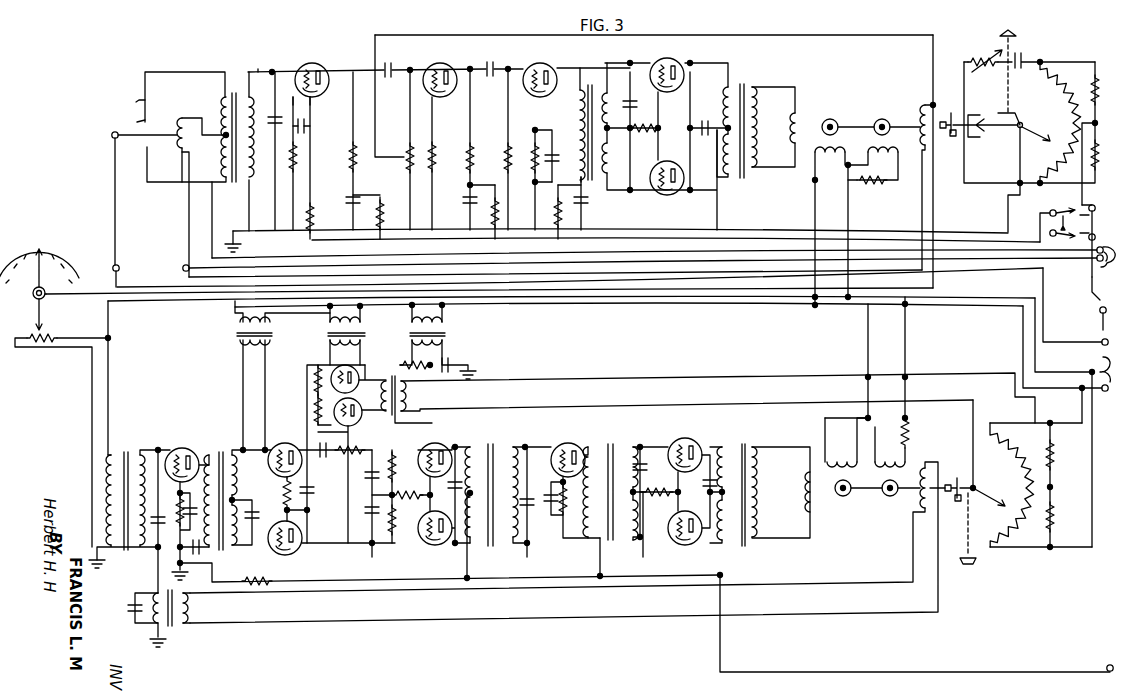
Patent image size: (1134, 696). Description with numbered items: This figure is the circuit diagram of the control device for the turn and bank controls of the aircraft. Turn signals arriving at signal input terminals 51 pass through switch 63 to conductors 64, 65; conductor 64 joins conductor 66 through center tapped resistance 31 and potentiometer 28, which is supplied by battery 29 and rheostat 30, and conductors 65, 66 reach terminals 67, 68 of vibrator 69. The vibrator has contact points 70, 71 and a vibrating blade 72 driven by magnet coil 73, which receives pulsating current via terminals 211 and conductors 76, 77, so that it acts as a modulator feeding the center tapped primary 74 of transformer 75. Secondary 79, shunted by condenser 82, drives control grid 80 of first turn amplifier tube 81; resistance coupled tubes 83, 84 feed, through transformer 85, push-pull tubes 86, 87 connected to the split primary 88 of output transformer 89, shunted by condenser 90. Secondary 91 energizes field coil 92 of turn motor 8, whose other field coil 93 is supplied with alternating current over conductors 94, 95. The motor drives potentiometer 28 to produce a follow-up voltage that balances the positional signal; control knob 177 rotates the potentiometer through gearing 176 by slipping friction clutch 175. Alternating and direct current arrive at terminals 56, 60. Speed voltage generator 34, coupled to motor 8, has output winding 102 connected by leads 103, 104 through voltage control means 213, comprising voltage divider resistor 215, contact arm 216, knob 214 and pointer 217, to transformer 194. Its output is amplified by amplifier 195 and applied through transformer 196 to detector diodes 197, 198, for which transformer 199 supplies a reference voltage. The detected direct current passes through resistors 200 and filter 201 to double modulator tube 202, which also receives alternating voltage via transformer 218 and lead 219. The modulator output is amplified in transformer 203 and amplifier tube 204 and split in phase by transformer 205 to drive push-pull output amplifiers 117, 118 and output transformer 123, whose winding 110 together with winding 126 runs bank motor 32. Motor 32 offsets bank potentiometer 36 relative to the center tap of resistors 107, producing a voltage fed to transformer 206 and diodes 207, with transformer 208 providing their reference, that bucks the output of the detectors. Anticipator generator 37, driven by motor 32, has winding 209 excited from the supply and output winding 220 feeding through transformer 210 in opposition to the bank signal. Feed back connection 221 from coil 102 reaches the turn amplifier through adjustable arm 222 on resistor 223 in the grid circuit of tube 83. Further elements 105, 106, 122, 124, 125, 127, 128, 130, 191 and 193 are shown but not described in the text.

The turn motor 8 is at (824, 120).
The potentiometer 28 is at (1051, 124).
The battery 29 is at (1026, 55).
The rheostat 30 is at (970, 55).
The center tapped resistance 31 is at (1097, 123).
The bank motor 32 is at (843, 496).
The speed voltage generator 34 is at (882, 119).
The bank potentiometer 36 is at (989, 482).
The anticipator generator 37 is at (890, 496).
The signal input terminals 51 is at (1104, 295).
The alternating current supply terminals 56 is at (1072, 422).
The direct current terminal 60 is at (1097, 329).
The switch 63 is at (1063, 226).
The conductor 64 is at (1052, 208).
The conductor 65 is at (1072, 305).
The conductor 66 is at (1008, 208).
The vibrator terminal 67 is at (119, 268).
The vibrator terminal 68 is at (183, 268).
The vibrator 69 is at (132, 101).
The contact point 70 is at (132, 118).
The contact point 71 is at (147, 147).
The vibrating blade 72 is at (112, 133).
The magnet coil 73 is at (178, 118).
The center tapped primary 74 is at (221, 110).
The transformer 75 is at (235, 78).
The conductor 76 is at (189, 190).
The conductor 77 is at (212, 190).
The secondary 79 is at (260, 62).
The control grid 80 is at (295, 63).
The first turn amplifier tube 81 is at (322, 64).
The condenser 82 is at (266, 170).
The resistance coupled tube 83 is at (449, 58).
The resistance coupled tube 84 is at (546, 64).
The transformer 85 is at (590, 85).
The push-pull tube 86 is at (677, 52).
The push-pull tube 87 is at (672, 195).
The split primary 88 is at (722, 98).
The output transformer 89 is at (748, 80).
The condenser 90 is at (695, 123).
The secondary 91 is at (762, 100).
The field coil 92 is at (790, 125).
The field coil 93 is at (830, 163).
The conductor 94 is at (815, 208).
The conductor 95 is at (848, 208).
The output winding 102 is at (922, 100).
The lead 103 is at (922, 200).
The lead 104 is at (933, 205).
The conductor 105 is at (1082, 400).
The conductor 106 is at (1092, 478).
The resistors 107 is at (1055, 487).
The motor winding 110 is at (805, 495).
The push-pull output amplifier 117 is at (672, 440).
The push-pull output amplifier 118 is at (672, 543).
The transformer primary 122 is at (722, 440).
The output transformer 123 is at (750, 437).
The condenser 124 is at (705, 494).
The coil 125 is at (782, 481).
The winding 126 is at (841, 451).
The conductor 127 is at (825, 423).
The coil 128 is at (848, 383).
The terminal 130 is at (1108, 665).
The friction clutch 175 is at (978, 139).
The gearing 176 is at (1013, 110).
The control knob 177 is at (1023, 69).
The coil 191 is at (872, 163).
The resistor 193 is at (880, 188).
The transformer 194 is at (129, 508).
The amplifier 195 is at (192, 442).
The transformer 196 is at (235, 487).
The detector diode 197 is at (287, 443).
The detector diode 198 is at (300, 550).
The transformer 199 is at (268, 330).
The resistors 200 is at (305, 385).
The filter 201 is at (347, 525).
The double modulator tube 202 is at (420, 553).
The transformer 203 is at (508, 502).
The amplifier tube 204 is at (578, 438).
The transformer 205 is at (625, 501).
The transformer 206 is at (381, 388).
The diodes 207 is at (362, 418).
The transformer 208 is at (362, 333).
The winding 209 is at (890, 382).
The transformer 210 is at (176, 628).
The terminals 211 is at (1095, 264).
The voltage control means 213 is at (24, 315).
The knob 214 is at (33, 293).
The voltage divider resistor 215 is at (50, 346).
The contact arm 216 is at (42, 316).
The pointer 217 is at (48, 290).
The transformer 218 is at (444, 330).
The lead 219 is at (462, 419).
The output winding 220 is at (925, 462).
The feed back connection 221 is at (864, 27).
The adjustable arm 222 is at (404, 150).
The resistor 223 is at (384, 181).